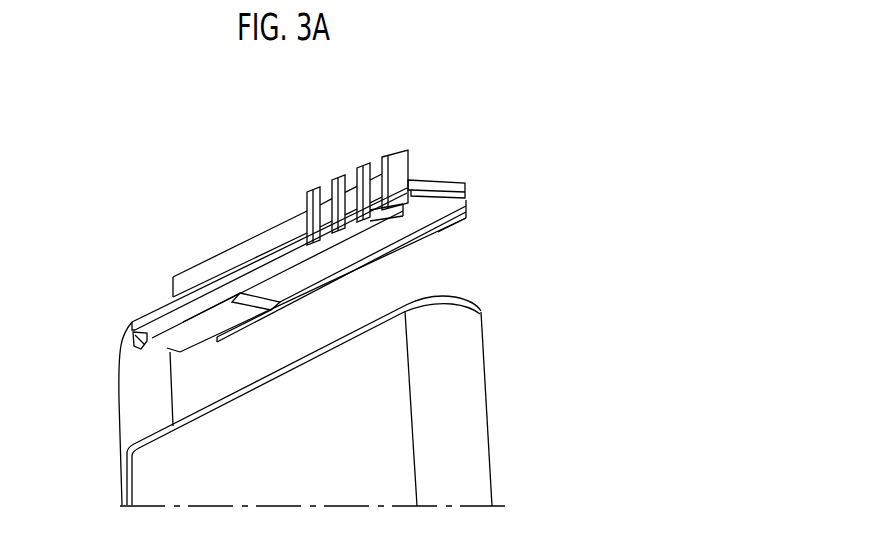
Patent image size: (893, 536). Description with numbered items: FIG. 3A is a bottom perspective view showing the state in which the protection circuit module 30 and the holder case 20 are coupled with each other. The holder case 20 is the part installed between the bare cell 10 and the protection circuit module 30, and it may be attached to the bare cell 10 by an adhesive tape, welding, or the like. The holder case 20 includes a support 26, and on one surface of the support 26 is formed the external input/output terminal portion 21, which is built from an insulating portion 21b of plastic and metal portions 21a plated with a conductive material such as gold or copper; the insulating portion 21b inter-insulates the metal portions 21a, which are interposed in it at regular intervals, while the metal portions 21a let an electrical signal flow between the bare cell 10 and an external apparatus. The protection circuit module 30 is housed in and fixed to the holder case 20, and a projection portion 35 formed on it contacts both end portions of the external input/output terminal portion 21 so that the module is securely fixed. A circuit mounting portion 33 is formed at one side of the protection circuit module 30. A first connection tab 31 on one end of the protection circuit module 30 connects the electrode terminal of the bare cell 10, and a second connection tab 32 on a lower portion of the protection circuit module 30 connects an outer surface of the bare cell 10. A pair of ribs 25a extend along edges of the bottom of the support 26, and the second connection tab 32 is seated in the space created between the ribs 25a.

The bare cell 10 is at (465, 415).
The holder case 20 is at (470, 206).
The external input/output terminal portion 21 is at (401, 86).
The metal portion 21a is at (371, 170).
The insulating portion 21b is at (338, 178).
The ribs 25a is at (387, 217).
The support 26 is at (171, 315).
The protection circuit module 30 is at (146, 308).
The first connection tab 31 is at (130, 415).
The second connection tab 32 is at (142, 349).
The circuit mounting portion 33 is at (237, 247).
The projection portion 35 is at (412, 181).